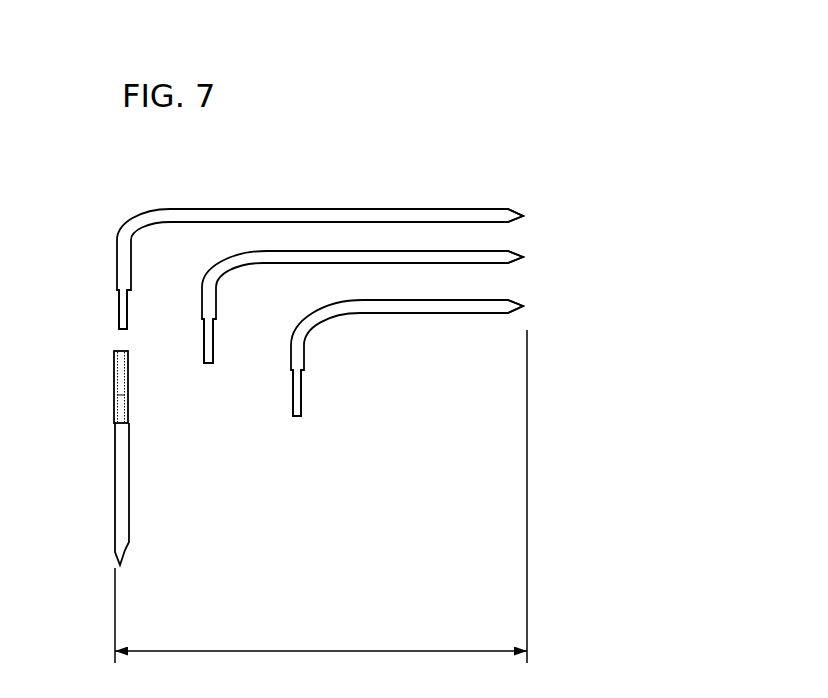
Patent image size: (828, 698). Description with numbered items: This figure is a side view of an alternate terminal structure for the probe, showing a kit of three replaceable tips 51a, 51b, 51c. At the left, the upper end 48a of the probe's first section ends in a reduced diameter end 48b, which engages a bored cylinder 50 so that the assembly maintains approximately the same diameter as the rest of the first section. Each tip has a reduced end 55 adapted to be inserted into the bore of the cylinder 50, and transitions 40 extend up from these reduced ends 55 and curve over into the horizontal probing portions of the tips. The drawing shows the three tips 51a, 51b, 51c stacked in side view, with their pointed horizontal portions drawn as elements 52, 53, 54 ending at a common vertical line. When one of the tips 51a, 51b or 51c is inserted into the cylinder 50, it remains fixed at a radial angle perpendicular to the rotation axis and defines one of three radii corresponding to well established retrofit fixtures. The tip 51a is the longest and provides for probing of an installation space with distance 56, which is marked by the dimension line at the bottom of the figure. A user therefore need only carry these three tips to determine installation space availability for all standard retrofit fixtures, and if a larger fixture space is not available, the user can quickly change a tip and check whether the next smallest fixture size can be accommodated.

The transitions 40 is at (291, 214).
The first tube 52 is at (486, 213).
The second tube 53 is at (412, 255).
The third tube 54 is at (366, 303).
The replaceable tip 51a is at (527, 298).
The replaceable tip 51b is at (515, 257).
The replaceable tip 51c is at (515, 306).
The reduced ends 55 is at (127, 327).
The bored cylinder 50 is at (70, 378).
The reduced diameter end 48b is at (115, 420).
The upper end 48a is at (116, 488).
The distance 56 is at (321, 496).